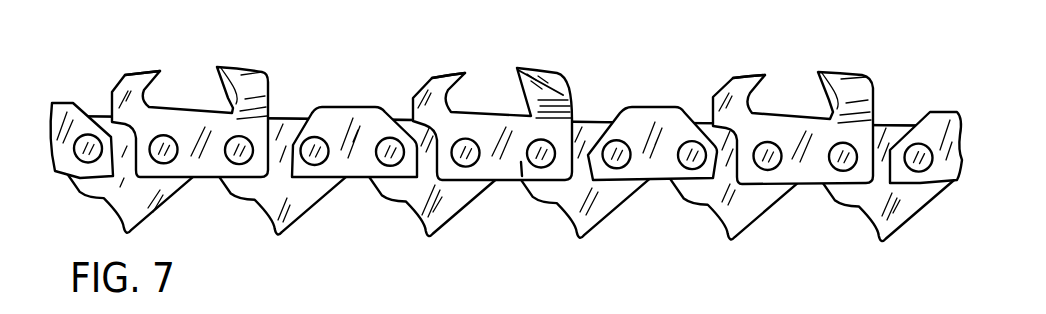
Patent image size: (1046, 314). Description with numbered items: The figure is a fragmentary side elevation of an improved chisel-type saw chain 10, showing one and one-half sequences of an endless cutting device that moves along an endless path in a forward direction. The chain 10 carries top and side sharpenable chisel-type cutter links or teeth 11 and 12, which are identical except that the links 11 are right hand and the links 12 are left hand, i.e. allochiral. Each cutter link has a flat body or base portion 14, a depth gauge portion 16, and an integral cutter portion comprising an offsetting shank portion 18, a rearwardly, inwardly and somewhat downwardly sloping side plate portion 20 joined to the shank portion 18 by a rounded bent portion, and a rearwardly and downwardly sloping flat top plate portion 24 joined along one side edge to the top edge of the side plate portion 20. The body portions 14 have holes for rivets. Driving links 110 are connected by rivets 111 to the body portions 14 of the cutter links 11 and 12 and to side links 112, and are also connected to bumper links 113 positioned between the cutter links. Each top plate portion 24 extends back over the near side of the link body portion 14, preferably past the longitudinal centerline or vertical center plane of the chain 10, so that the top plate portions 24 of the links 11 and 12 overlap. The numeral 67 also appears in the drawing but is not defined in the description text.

The saw chain 10 is at (645, 72).
The cutter link 11 is at (544, 62).
The cutter link 12 is at (256, 60).
The body portion 14 is at (189, 117).
The depth gauge portion 16 is at (124, 86).
The shank portion 18 is at (233, 107).
The side plate portion 20 is at (564, 94).
The top plate portion 24 is at (263, 79).
The depth gauge top surface 67 is at (147, 72).
The driving links 110 is at (242, 190).
The rivets 111 is at (315, 158).
The side links 112 is at (515, 177).
The bumper links 113 is at (353, 163).